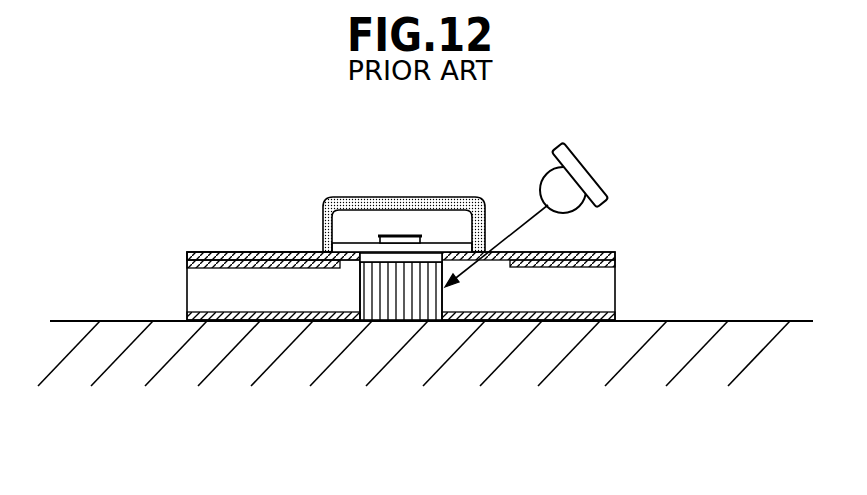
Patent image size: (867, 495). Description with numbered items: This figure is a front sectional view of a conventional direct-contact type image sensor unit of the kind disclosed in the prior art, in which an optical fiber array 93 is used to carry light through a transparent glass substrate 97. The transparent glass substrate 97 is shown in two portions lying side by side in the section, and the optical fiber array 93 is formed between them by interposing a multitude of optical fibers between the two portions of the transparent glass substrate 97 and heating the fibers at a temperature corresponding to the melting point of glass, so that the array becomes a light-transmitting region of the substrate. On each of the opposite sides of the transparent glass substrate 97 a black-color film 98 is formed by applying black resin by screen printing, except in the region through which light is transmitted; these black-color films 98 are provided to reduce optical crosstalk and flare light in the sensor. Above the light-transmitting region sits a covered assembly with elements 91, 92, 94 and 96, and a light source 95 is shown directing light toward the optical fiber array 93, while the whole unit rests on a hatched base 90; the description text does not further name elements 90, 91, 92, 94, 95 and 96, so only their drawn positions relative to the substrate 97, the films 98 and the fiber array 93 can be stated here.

The mounting base 90 is at (303, 357).
The package cavity 91 is at (373, 225).
The semiconductor chip 92 is at (418, 237).
The optical fiber array 93 is at (417, 302).
The board top surface 94 is at (232, 250).
The light source 95 is at (567, 182).
The cap 96 is at (323, 240).
The transparent glass substrate 97 is at (277, 302).
The black-color film 98 is at (230, 251).